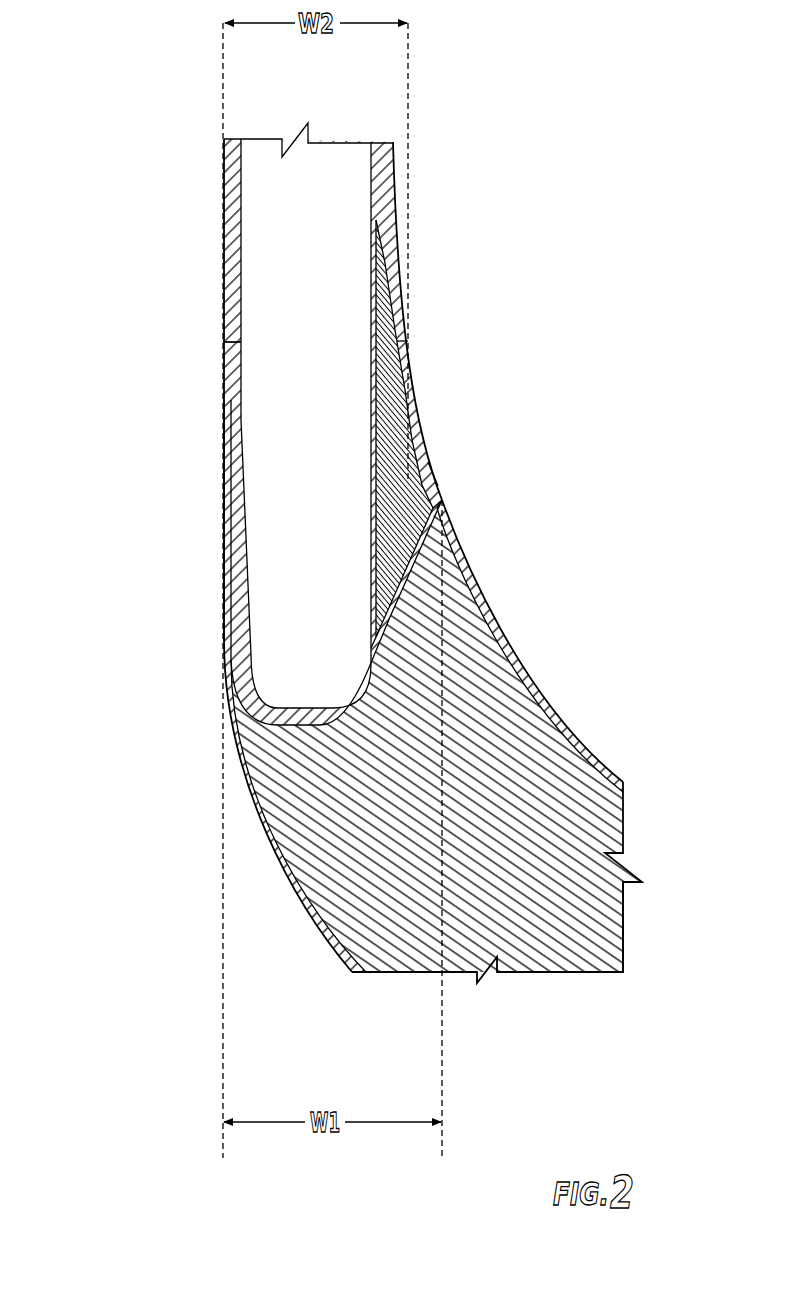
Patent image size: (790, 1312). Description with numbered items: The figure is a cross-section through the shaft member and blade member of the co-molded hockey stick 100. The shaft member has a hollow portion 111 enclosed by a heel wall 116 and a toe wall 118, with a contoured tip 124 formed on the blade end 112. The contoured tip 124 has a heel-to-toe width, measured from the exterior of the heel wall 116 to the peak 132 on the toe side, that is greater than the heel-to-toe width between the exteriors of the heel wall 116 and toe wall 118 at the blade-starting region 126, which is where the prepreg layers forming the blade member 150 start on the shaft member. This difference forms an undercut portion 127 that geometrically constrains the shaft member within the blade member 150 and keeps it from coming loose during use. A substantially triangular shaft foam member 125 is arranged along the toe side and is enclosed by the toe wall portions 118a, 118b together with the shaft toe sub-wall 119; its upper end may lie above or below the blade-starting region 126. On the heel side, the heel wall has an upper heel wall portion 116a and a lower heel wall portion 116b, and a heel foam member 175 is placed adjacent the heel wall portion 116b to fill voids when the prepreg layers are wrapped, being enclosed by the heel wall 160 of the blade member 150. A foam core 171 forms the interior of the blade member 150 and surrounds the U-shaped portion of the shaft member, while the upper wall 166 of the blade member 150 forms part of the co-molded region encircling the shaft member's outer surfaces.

The hockey stick 100 is at (172, 78).
The hollow portion 111 is at (343, 323).
The blade end 112 is at (272, 727).
The heel wall 116 is at (230, 203).
The heel wall portion 116a is at (236, 483).
The heel wall portion 116b is at (236, 565).
The toe wall 118 is at (396, 213).
The toe wall portion 118a is at (414, 412).
The toe wall portion 118b is at (427, 545).
The shaft toe sub-wall 119 is at (377, 575).
The contoured tip 124 is at (397, 610).
The shaft foam member 125 is at (385, 378).
The blade-starting region 126 is at (236, 340).
The undercut portion 127 is at (438, 473).
The peak 132 is at (443, 498).
The blade member 150 is at (605, 760).
The heel wall 160 is at (222, 517).
The upper wall 166 is at (568, 718).
The foam core 171 is at (345, 870).
The heel foam member 175 is at (232, 682).